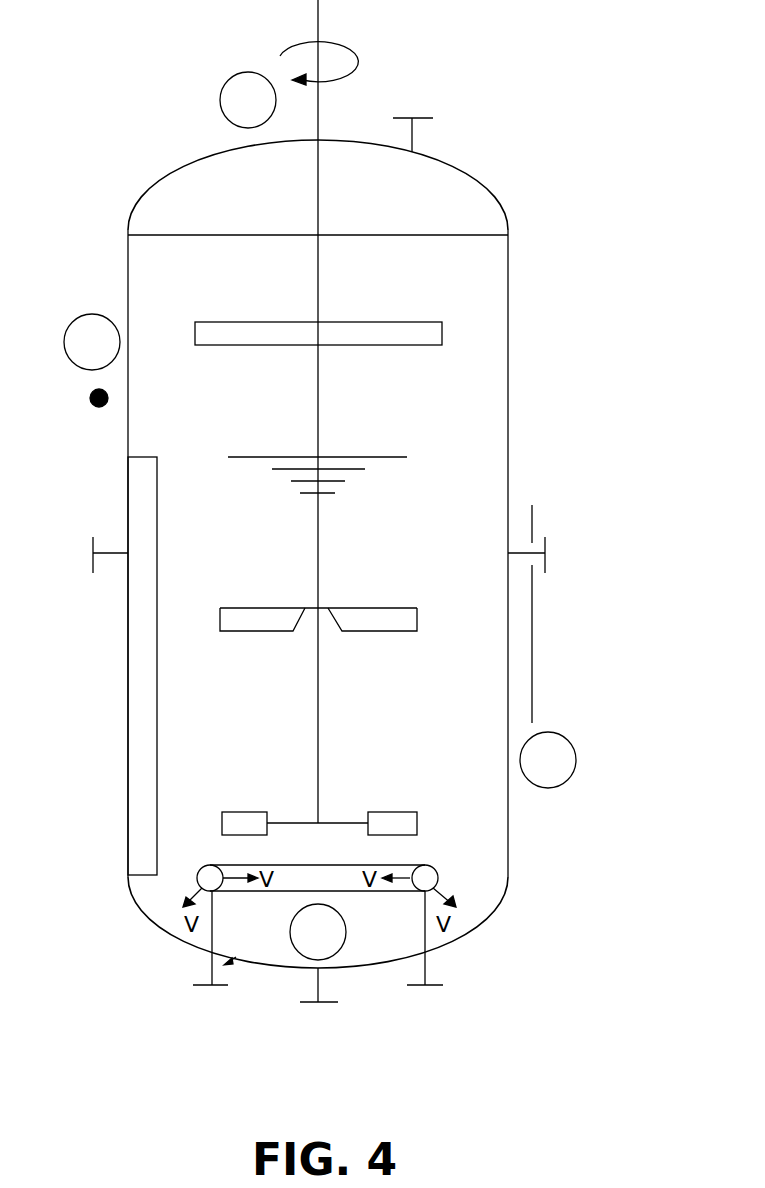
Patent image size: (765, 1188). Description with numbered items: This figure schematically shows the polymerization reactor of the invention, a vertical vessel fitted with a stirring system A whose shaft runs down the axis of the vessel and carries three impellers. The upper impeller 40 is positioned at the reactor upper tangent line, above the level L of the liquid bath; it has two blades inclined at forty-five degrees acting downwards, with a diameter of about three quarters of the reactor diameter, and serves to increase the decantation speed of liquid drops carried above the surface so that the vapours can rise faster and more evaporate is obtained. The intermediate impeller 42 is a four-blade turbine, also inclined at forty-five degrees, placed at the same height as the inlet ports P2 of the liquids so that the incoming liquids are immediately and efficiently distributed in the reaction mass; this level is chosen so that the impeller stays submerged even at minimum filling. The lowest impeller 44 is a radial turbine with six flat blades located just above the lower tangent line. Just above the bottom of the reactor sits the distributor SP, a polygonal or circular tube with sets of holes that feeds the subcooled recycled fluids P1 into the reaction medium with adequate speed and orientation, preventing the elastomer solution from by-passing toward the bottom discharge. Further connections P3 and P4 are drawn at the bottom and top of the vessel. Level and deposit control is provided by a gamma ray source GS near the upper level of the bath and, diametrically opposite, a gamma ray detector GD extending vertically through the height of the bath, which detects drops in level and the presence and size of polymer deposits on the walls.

The upper impeller 40 is at (427, 333).
The intermediate impeller 42 is at (380, 618).
The lowest impeller 44 is at (405, 825).
The level of the liquid bath L is at (373, 457).
The stirring system A is at (248, 100).
The subcooled recycled fluids P1 is at (318, 962).
The inlet ports of the liquids P2 is at (321, 555).
The port 3 P3 is at (319, 1010).
The port 4 P4 is at (413, 122).
The gamma ray source GS is at (92, 342).
The gamma ray detector GD is at (548, 646).
The distributor SP is at (318, 932).